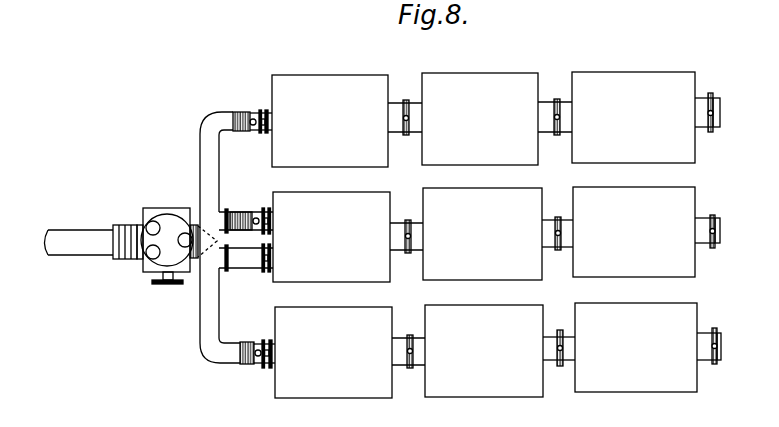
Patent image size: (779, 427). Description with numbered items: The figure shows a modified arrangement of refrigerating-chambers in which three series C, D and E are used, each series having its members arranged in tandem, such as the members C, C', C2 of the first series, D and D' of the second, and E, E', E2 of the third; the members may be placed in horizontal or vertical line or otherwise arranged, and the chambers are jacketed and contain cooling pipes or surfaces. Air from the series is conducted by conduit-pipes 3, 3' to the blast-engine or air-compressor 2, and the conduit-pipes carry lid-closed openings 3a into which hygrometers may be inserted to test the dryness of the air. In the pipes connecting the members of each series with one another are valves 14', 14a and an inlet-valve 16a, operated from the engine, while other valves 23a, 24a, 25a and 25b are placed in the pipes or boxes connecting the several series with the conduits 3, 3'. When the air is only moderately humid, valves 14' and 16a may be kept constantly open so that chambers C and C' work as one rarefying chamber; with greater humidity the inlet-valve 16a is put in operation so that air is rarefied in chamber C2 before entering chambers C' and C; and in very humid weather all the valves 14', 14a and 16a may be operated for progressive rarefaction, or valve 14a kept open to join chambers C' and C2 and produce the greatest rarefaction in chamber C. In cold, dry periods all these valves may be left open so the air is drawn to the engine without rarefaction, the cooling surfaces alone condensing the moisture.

The blast-engine or air-compressor 2 is at (131, 246).
The conduit-pipe 3 is at (202, 295).
The conduit-pipe 3' is at (204, 170).
The openings in the conduit-pipes 3a is at (253, 118).
The valve 14' is at (406, 248).
The valve 14a is at (558, 251).
The inlet-valve 16a is at (718, 229).
The valve 23a is at (267, 367).
The valve 24a is at (264, 133).
The valve 25a is at (266, 271).
The valve 25b is at (263, 209).
The series of chambers E is at (330, 121).
The member of series E E' is at (480, 119).
The member of series E E2 is at (633, 117).
The series of chambers D is at (484, 234).
The member of series D D' is at (482, 234).
The chamber C is at (333, 352).
The chamber C' is at (484, 351).
The chamber C2 is at (636, 347).